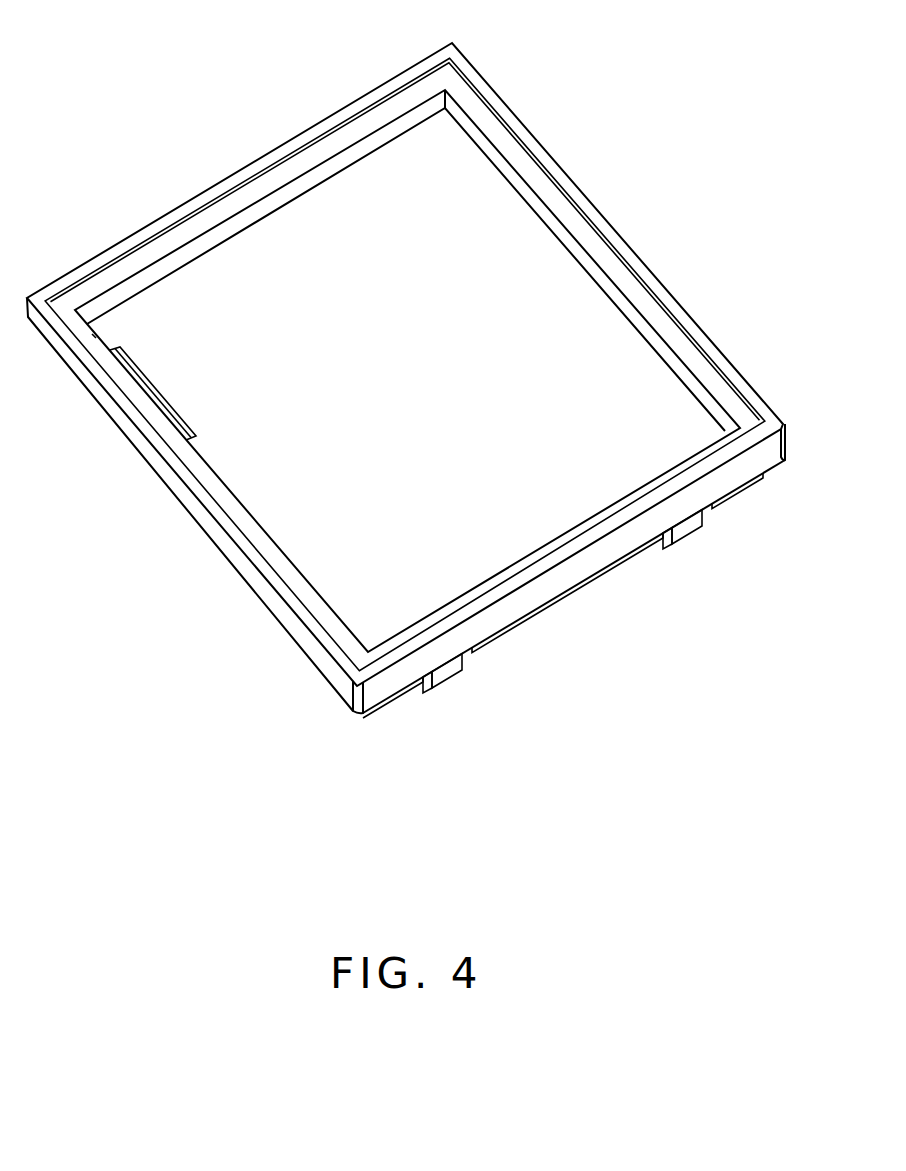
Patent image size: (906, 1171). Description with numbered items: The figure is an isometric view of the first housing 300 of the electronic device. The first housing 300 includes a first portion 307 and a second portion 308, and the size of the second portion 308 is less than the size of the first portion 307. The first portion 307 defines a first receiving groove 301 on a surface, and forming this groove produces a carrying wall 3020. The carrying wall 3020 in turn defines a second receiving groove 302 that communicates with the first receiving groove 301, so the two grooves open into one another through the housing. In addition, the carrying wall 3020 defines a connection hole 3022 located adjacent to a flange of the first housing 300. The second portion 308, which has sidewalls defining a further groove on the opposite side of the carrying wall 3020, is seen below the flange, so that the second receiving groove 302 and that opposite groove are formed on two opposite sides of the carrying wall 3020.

The first housing 300 is at (213, 60).
The first receiving groove 301 is at (152, 258).
The second receiving groove 302 is at (373, 371).
The carrying wall 3020 is at (248, 462).
The connection hole 3022 is at (152, 396).
The first portion 307 is at (768, 455).
The second portion 308 is at (717, 500).